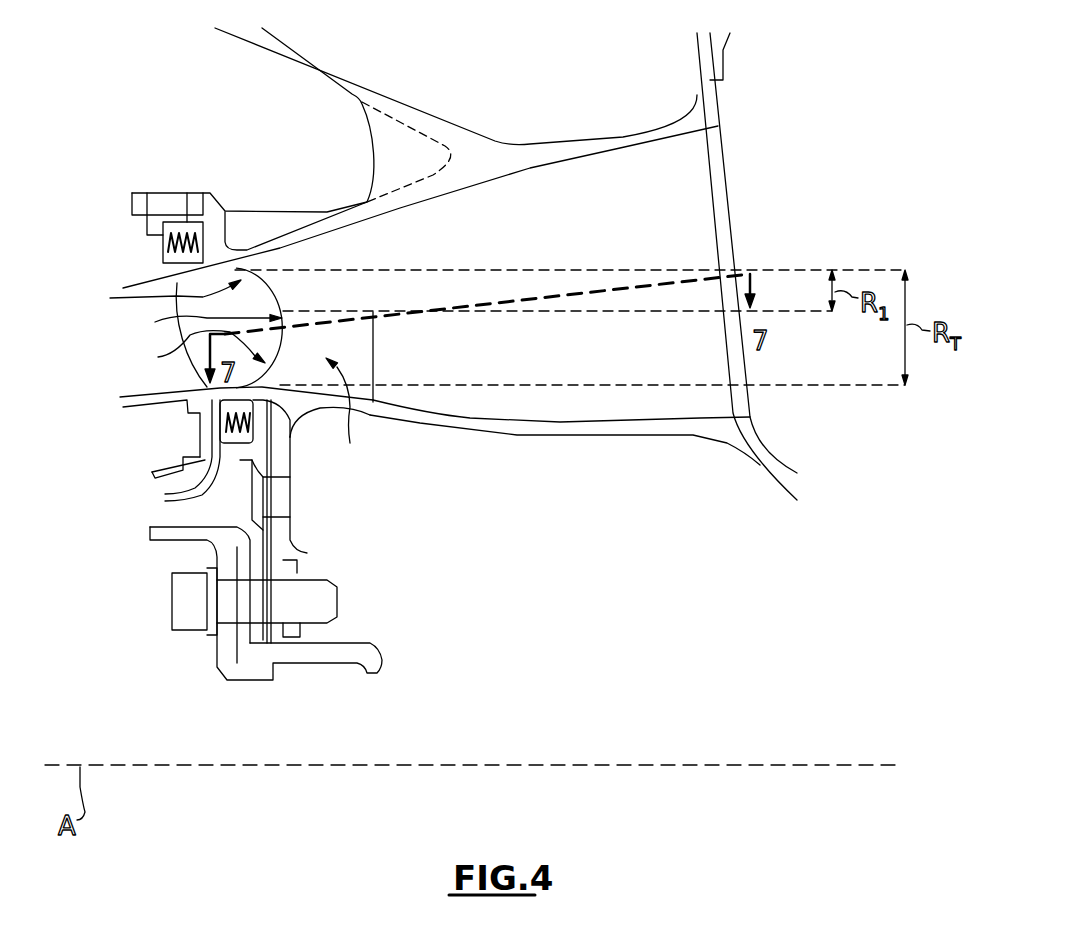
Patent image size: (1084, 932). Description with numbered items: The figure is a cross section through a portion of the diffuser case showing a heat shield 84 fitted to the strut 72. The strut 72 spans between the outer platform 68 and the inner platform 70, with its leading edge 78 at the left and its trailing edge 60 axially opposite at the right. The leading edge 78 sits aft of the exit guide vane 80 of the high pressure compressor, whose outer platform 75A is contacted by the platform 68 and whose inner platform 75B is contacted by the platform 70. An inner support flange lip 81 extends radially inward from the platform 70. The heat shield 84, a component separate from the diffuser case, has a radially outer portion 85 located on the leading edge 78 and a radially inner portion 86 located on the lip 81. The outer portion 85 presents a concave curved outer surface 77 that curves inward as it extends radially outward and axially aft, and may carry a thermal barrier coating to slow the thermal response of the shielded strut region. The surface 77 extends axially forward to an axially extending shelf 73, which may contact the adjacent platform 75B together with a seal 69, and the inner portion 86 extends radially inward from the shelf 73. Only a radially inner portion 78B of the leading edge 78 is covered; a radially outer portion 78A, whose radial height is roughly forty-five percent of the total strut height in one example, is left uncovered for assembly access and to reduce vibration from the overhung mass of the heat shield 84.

The trailing edge 60 is at (740, 400).
The outer platform 68 is at (441, 177).
The inner platform 70 is at (455, 420).
The strut 72 is at (320, 257).
The axially extending shelf 73 is at (197, 477).
The outer platform of the exit guide vane 75A is at (125, 281).
The inner platform of the exit guide vane 75B is at (162, 397).
The concave curved outer surface 77 is at (204, 323).
The leading edge 78 is at (262, 303).
The radially outer portion of the leading edge 78A is at (155, 296).
The radially inner portion of the leading edge 78B is at (188, 353).
The exit guide vane 80 is at (147, 384).
The inner support flange lip 81 is at (290, 493).
The heat shield 84 is at (288, 418).
The radially outer portion 85 is at (355, 389).
The radially inner portion 86 is at (274, 529).
The seal 69 is at (232, 437).